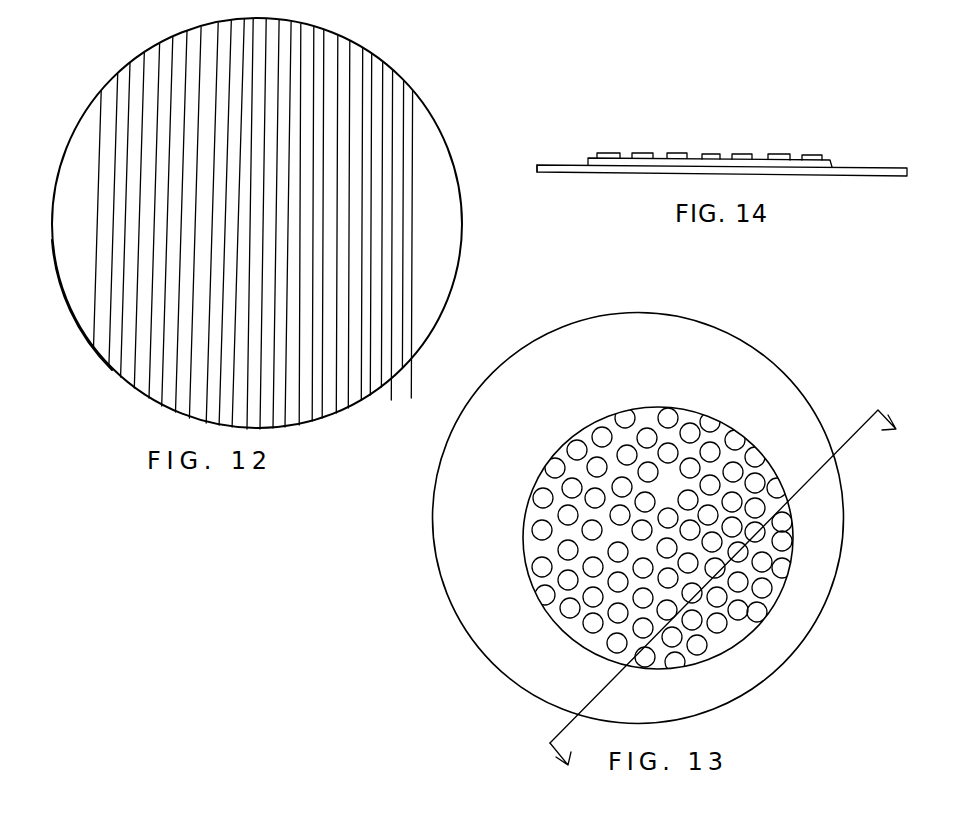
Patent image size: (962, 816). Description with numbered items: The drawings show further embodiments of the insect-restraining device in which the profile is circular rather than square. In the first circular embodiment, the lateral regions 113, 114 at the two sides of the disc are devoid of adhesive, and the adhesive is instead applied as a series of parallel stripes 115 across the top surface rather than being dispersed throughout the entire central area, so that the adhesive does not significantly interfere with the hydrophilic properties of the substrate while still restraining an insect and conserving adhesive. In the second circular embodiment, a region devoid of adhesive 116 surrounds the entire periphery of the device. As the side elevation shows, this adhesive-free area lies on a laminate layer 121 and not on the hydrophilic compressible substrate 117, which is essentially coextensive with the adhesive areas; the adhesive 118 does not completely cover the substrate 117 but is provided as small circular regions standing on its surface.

In FIG. 12, the lateral region 113 is at (425, 145).
In FIG. 12, the lateral region 114 is at (76, 290).
In FIG. 12, the parallel channels 115 is at (348, 393).
In FIG. 13, the region devoid of adhesive 116 is at (725, 352).
In FIG. 14, the region devoid of adhesive 116 is at (565, 172).
In FIG. 13, the hydrophilic compressible substrate 117 is at (692, 415).
In FIG. 14, the hydrophilic compressible substrate 117 is at (833, 162).
In FIG. 13, the adhesive 118 is at (647, 438).
In FIG. 14, the adhesive 118 is at (604, 153).
In FIG. 14, the laminate layer 121 is at (537, 168).